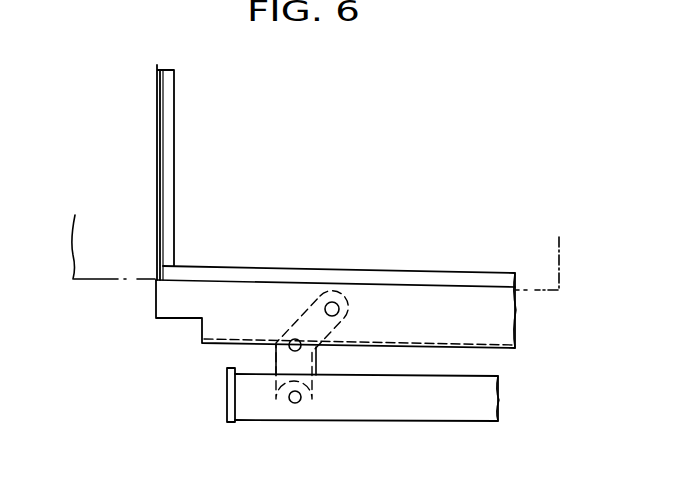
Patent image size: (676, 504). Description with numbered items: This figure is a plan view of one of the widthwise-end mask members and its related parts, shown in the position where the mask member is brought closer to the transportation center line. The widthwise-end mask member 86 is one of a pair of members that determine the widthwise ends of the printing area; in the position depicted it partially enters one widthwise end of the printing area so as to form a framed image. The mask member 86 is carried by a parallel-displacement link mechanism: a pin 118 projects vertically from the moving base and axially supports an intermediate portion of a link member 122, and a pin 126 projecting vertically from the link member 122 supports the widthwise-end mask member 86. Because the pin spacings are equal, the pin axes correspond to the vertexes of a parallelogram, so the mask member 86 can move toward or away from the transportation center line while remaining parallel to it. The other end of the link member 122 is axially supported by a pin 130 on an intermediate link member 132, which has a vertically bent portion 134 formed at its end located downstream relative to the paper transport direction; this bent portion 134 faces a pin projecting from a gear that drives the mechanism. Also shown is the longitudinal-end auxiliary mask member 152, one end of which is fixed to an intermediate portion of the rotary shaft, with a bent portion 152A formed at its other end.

The widthwise-end mask member 86 is at (509, 318).
The pin 118 is at (298, 351).
The link member 122 is at (276, 362).
The pin 126 is at (339, 309).
The pin 130 is at (301, 397).
The intermediate link member 132 is at (412, 414).
The vertically bent portion 134 is at (227, 408).
The longitudinal-end auxiliary mask member 152 is at (165, 117).
The bent portion 152A is at (174, 188).